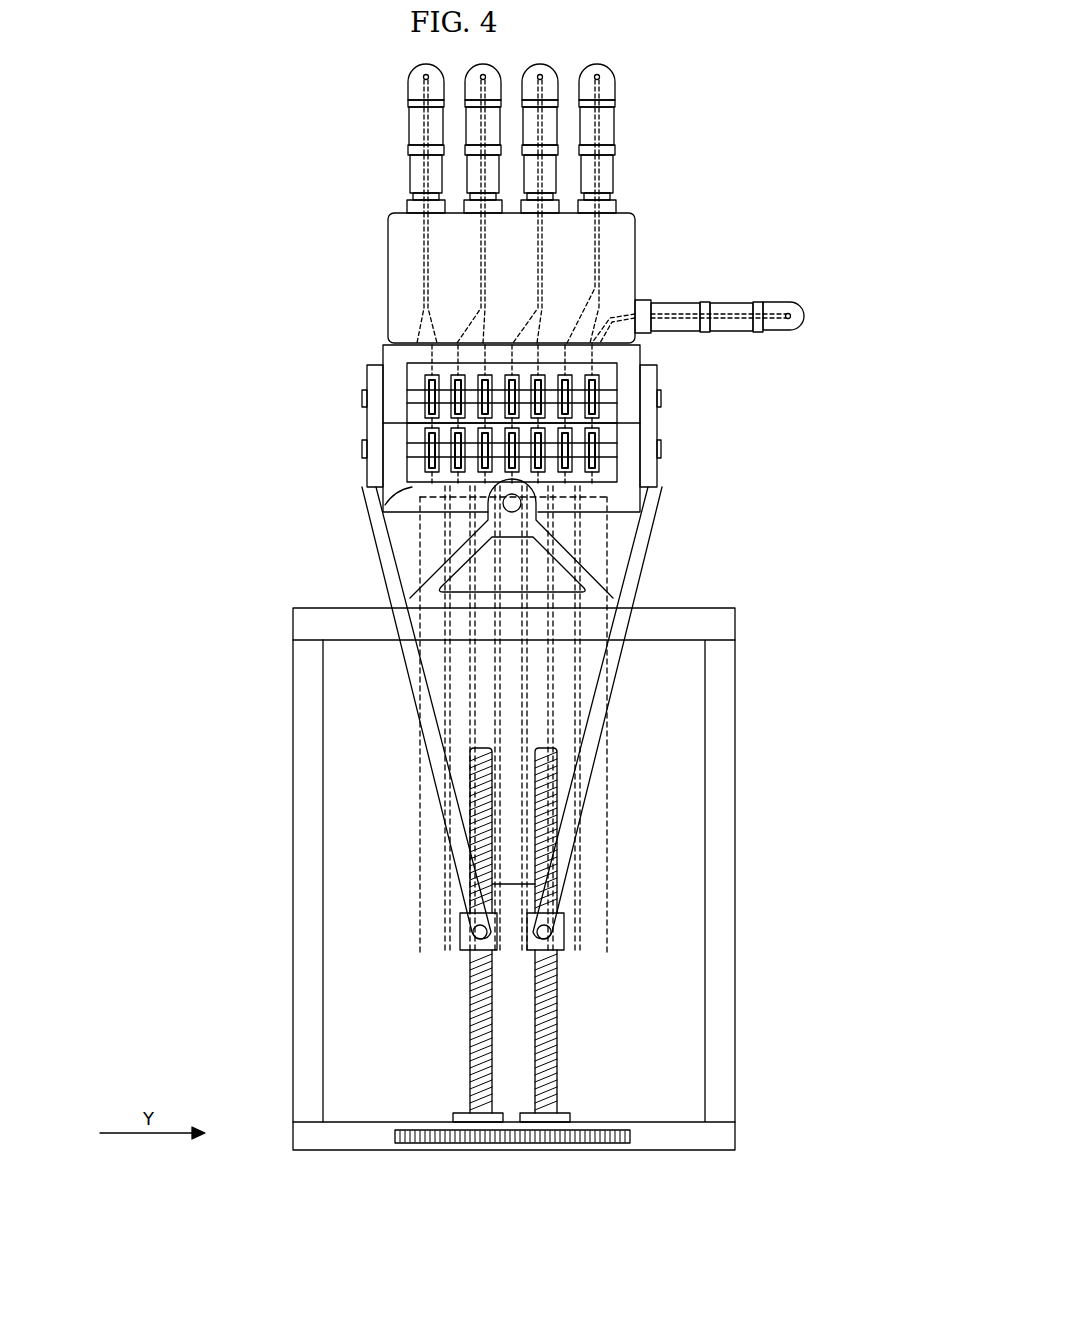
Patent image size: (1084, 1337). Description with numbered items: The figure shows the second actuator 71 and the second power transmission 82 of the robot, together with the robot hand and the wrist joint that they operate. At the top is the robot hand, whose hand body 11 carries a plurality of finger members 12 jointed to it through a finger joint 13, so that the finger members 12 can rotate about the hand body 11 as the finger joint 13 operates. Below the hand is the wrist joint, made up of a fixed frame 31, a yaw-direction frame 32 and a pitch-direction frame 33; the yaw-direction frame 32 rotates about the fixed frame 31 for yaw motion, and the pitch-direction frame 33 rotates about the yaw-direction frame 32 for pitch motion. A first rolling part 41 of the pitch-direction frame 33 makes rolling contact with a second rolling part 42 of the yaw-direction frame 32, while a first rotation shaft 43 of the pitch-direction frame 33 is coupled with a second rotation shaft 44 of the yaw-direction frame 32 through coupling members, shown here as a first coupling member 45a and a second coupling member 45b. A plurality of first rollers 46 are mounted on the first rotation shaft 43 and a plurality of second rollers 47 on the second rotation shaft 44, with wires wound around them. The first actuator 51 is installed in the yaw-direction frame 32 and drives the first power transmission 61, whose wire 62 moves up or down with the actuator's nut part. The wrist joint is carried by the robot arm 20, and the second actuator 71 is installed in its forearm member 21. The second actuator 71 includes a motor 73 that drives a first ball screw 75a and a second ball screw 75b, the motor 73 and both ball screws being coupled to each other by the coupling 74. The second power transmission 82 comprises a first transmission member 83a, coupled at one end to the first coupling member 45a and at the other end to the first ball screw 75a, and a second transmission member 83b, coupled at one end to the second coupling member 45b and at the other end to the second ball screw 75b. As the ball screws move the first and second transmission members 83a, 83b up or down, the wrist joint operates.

The hand body 11 is at (388, 257).
The finger member 12 is at (414, 118).
The finger joint 13 is at (410, 192).
The robot arm 20 is at (441, 879).
The forearm member 21 is at (285, 815).
The fixed frame 31 is at (300, 620).
The yaw-direction frame 32 is at (420, 494).
The pitch-direction frame 33 is at (383, 350).
The first rolling part 41 is at (630, 398).
The second rolling part 42 is at (630, 432).
The first rotation shaft 43 is at (365, 394).
The second rotation shaft 44 is at (365, 455).
The first coupling member 45a is at (367, 420).
The second coupling member 45b is at (650, 416).
The first rollers 46 is at (600, 383).
The second rollers 47 is at (603, 462).
The first actuator 51 is at (613, 529).
The first power transmission 61 is at (430, 278).
The wire 62 is at (449, 582).
The second actuator 71 is at (526, 974).
The motor 73 is at (505, 1066).
The coupling 74 is at (506, 1148).
The first ball screw 75a is at (473, 1030).
The second ball screw 75b is at (555, 1030).
The second power transmission 82 is at (505, 713).
The first transmission member 83a is at (392, 568).
The second transmission member 83b is at (633, 565).